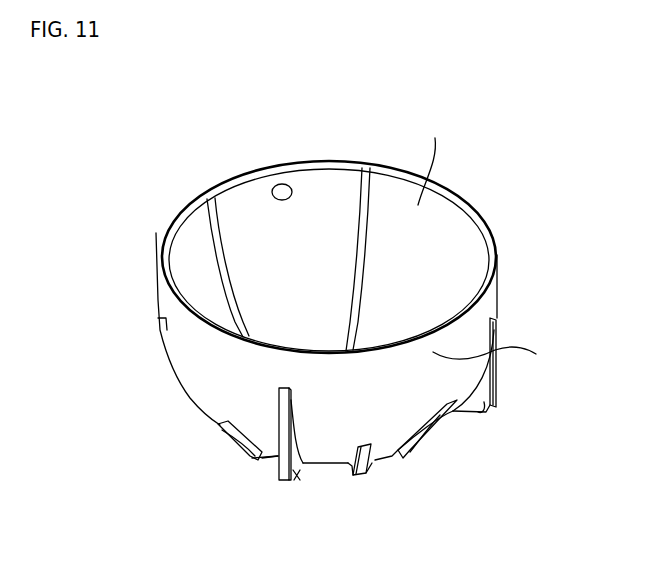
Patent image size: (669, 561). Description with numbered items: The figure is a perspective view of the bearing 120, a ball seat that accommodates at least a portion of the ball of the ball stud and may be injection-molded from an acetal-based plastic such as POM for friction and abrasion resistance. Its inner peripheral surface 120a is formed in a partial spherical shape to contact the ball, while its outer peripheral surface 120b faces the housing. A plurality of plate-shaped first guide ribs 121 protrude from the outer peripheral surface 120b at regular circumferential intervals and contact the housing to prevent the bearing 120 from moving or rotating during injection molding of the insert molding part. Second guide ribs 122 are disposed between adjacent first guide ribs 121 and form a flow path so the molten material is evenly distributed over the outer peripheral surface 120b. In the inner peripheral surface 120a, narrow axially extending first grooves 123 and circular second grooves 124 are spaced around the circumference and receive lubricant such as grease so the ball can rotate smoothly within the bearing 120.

The bearing 120 is at (483, 146).
The inner peripheral surface 120a is at (435, 161).
The outer peripheral surface 120b is at (504, 354).
The first guide rib 121 is at (298, 482).
The second guide rib 122 is at (255, 462).
The first groove 123 is at (212, 253).
The second groove 124 is at (281, 186).